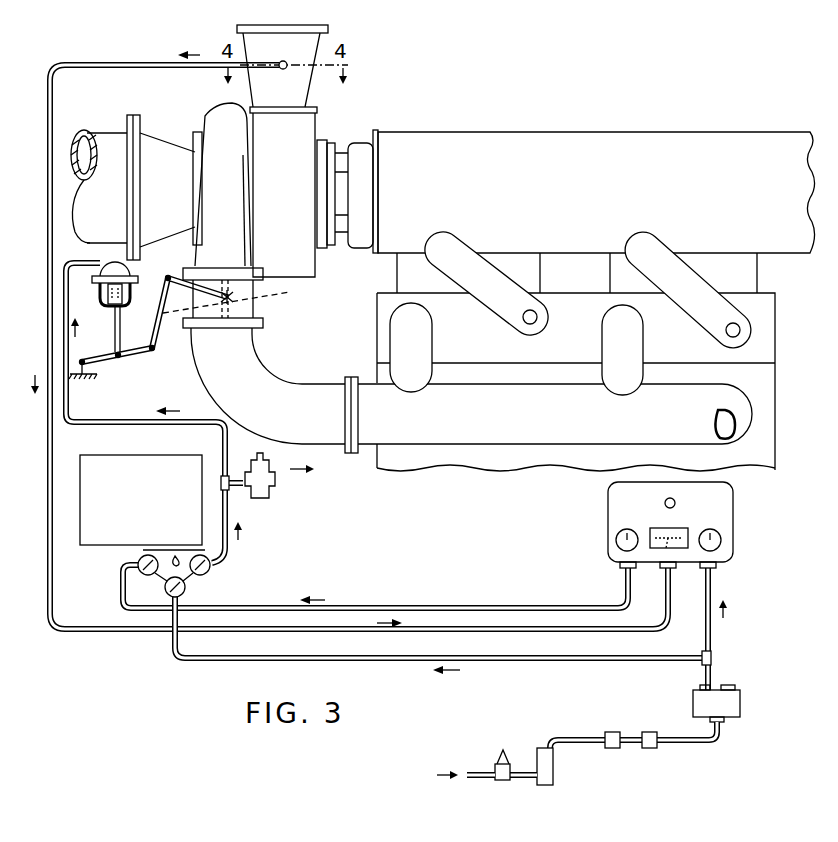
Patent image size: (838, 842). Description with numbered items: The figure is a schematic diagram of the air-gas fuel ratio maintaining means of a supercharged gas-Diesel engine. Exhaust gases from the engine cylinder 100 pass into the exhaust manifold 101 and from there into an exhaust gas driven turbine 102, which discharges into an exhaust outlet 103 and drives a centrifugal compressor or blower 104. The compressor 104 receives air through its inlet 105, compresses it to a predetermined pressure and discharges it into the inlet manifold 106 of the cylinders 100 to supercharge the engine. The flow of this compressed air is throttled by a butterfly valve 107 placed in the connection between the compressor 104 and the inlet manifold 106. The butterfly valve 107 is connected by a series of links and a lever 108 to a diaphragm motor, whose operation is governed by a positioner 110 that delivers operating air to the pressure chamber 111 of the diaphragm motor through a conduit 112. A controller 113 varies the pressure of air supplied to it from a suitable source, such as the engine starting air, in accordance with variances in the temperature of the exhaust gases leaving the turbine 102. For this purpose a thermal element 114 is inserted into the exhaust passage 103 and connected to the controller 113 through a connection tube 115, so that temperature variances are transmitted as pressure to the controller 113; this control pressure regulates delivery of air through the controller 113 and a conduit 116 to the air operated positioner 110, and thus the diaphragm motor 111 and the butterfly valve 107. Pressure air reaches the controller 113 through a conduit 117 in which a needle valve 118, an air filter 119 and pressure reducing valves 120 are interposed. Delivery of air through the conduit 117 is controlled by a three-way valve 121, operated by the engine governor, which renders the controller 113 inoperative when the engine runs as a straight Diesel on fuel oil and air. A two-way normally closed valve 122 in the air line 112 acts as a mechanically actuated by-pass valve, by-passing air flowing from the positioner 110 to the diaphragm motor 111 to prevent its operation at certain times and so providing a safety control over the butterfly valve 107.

The engine cylinder 100 is at (612, 300).
The exhaust manifold 101 is at (703, 140).
The exhaust gas driven turbine 102 is at (303, 258).
The exhaust outlet 103 is at (310, 45).
The centrifugal compressor or blower 104 is at (222, 120).
The inlet 105 is at (160, 150).
The inlet manifold 106 is at (262, 368).
The butterfly valve 107 is at (263, 301).
The lever 108 is at (130, 357).
The positioner 110 is at (110, 528).
The pressure chamber 111 is at (108, 274).
The conduit 112 is at (111, 422).
The controller 113 is at (617, 521).
The thermal element 114 is at (288, 69).
The connection tube 115 is at (138, 64).
The conduit 116 is at (434, 606).
The conduit 117 is at (481, 773).
The needle valve 118 is at (497, 762).
The air filter 119 is at (554, 765).
The pressure reducing valves 120 is at (613, 731).
The three-way valve 121 is at (733, 702).
The two-way normally closed valve 122 is at (263, 494).